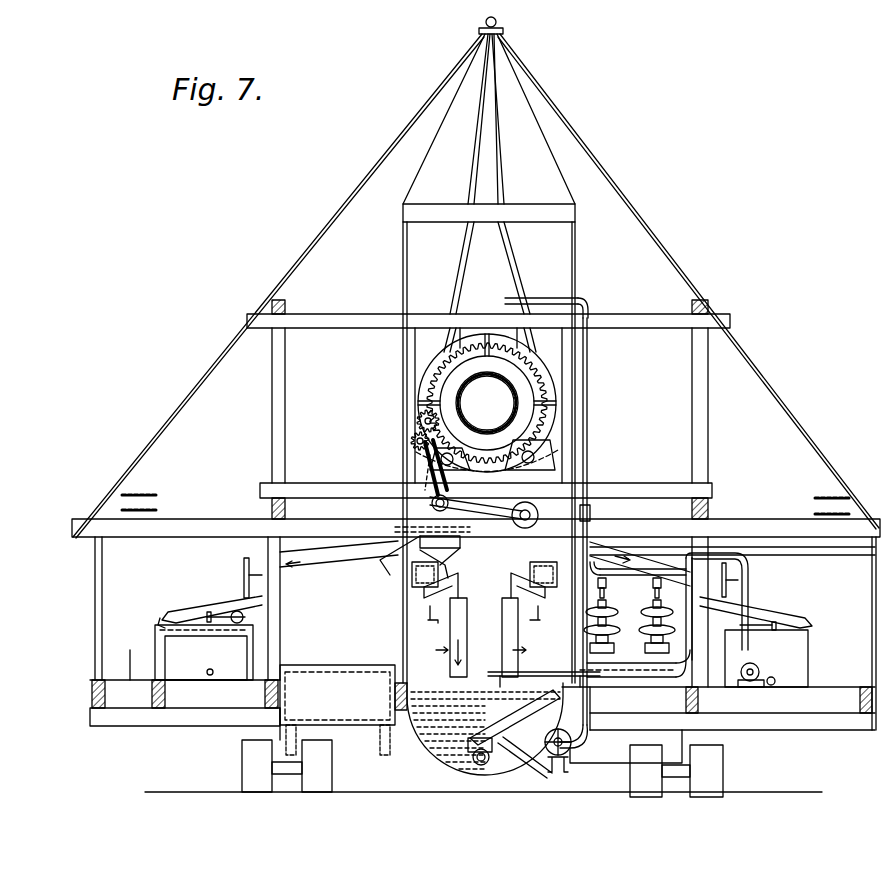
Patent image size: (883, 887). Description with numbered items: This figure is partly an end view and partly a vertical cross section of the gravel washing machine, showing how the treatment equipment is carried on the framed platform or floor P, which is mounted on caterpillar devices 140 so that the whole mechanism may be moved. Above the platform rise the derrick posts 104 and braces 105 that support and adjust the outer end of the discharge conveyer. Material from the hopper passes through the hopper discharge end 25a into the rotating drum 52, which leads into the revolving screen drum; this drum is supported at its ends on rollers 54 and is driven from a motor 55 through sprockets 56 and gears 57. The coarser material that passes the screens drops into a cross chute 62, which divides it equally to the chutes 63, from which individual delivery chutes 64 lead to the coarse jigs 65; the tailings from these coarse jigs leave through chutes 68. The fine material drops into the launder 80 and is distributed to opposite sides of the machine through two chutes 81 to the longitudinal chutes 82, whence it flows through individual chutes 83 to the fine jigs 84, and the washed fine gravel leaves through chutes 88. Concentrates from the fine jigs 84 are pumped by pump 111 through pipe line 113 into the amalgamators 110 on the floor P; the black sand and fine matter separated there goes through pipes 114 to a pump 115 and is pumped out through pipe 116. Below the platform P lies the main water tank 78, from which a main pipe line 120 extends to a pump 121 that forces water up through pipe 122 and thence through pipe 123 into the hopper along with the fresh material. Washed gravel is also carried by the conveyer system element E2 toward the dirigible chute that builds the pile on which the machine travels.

The braces 105 is at (382, 153).
The derrick posts 104 is at (506, 200).
The pipe 123 is at (590, 318).
The pipe 122 is at (590, 540).
The rotating drum 52 is at (525, 368).
The hopper discharge end 25a is at (516, 396).
The launder 80 is at (551, 430).
The gears 57 is at (422, 418).
The rollers 54 is at (556, 455).
The sprockets 56 is at (483, 512).
The motor 55 is at (545, 503).
The cross chute 62 is at (420, 527).
The conveyer system element E2 is at (148, 493).
The chutes 88 is at (262, 660).
The framed platform or floor P is at (121, 659).
The individual chutes 83 is at (183, 608).
The longitudinal chutes 82 is at (242, 583).
The fine jigs 84 is at (818, 602).
The chutes 81 is at (345, 560).
The pipe 116 is at (752, 555).
The chutes 63 is at (410, 575).
The individual delivery chutes 64 is at (460, 586).
The chutes 68 is at (502, 622).
The coarse jigs 65 is at (434, 650).
The pipes 114 is at (520, 670).
The water tank 78 is at (430, 745).
The main pipe line 120 is at (530, 742).
The pump 121 is at (578, 752).
The caterpillar devices 140 is at (236, 753).
The amalgamators 110 is at (605, 606).
The pipe line 113 is at (640, 568).
The pump 111 is at (760, 668).
The pump 115 is at (672, 680).